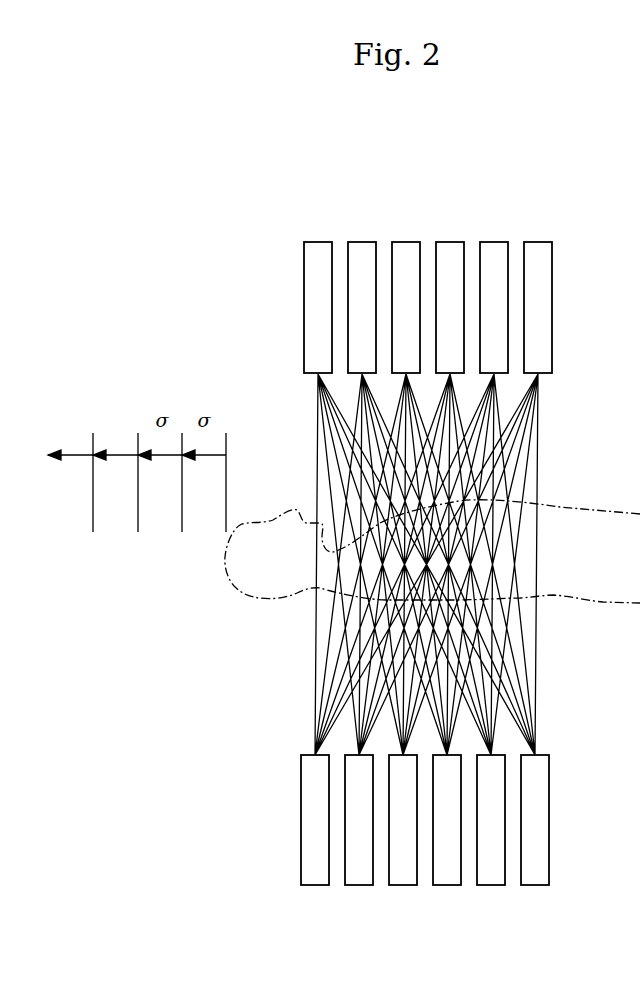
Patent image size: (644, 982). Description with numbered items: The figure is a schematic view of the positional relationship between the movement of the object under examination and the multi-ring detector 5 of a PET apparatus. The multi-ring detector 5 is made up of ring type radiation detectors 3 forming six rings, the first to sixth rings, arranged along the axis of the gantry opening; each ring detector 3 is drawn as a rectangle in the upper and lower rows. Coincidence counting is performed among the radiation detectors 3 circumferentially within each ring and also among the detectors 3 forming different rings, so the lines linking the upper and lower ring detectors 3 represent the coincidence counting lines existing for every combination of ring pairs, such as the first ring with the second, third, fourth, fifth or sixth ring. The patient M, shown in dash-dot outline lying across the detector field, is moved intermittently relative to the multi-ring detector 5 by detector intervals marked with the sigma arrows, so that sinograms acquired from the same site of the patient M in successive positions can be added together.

The multi-ring detector 5 is at (547, 204).
The ring detector 3 is at (536, 241).
The patient M is at (563, 597).